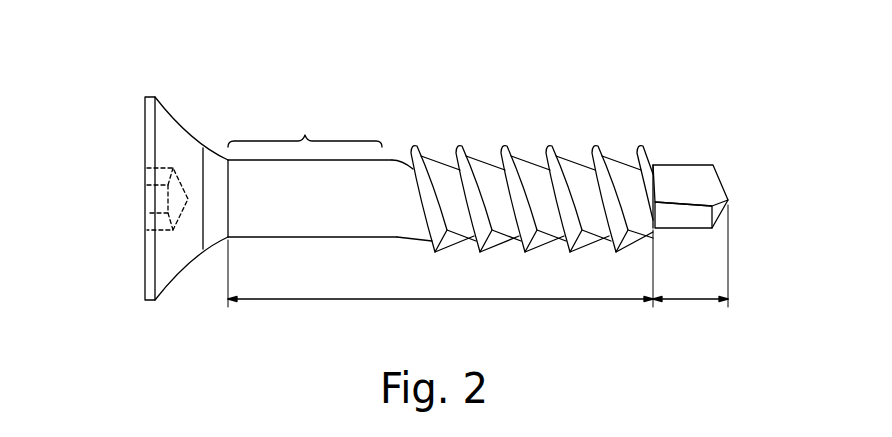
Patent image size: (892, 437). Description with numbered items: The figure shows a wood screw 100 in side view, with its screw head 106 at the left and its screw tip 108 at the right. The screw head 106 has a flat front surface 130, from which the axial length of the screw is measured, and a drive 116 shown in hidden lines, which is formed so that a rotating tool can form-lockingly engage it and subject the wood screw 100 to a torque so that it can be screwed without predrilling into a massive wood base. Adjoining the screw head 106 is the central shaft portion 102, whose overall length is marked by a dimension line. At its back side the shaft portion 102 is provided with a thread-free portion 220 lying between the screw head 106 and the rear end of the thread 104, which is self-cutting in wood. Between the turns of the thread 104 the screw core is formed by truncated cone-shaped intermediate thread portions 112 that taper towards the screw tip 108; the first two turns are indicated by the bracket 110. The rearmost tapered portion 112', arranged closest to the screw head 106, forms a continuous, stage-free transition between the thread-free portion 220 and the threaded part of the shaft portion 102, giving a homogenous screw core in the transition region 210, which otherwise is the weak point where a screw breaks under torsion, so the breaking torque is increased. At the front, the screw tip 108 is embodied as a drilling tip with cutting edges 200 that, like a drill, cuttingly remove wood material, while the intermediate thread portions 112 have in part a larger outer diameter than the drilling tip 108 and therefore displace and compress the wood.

The wood screw 100 is at (430, 178).
The front surface 130 is at (143, 120).
The screw head 106 is at (173, 137).
The drive 116 is at (162, 196).
The rearmost tapered portion 112' is at (315, 198).
The thread-free portion 220 is at (305, 125).
The transition region 210 is at (393, 143).
The thread 104 is at (416, 251).
The thread 110 is at (503, 143).
The intermediate thread portions 112 is at (555, 223).
The cutting edges 200 is at (720, 179).
The shaft portion 102 is at (310, 299).
The screw tip 108 is at (682, 300).